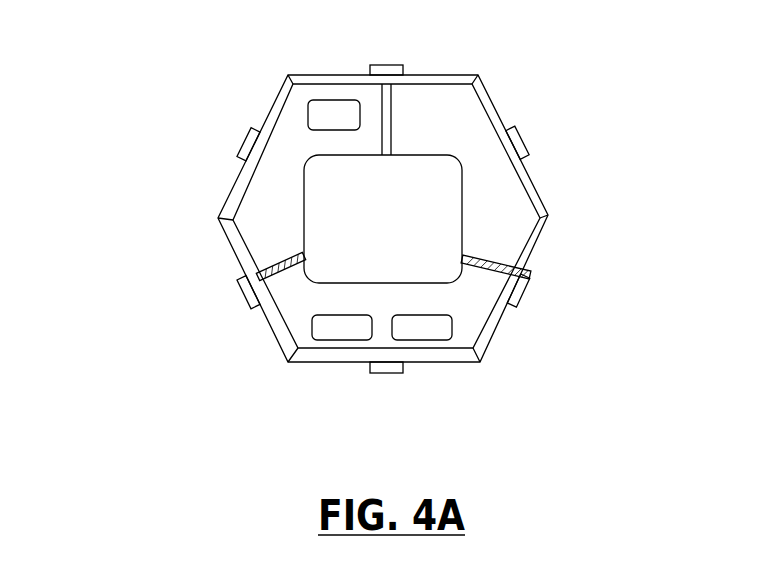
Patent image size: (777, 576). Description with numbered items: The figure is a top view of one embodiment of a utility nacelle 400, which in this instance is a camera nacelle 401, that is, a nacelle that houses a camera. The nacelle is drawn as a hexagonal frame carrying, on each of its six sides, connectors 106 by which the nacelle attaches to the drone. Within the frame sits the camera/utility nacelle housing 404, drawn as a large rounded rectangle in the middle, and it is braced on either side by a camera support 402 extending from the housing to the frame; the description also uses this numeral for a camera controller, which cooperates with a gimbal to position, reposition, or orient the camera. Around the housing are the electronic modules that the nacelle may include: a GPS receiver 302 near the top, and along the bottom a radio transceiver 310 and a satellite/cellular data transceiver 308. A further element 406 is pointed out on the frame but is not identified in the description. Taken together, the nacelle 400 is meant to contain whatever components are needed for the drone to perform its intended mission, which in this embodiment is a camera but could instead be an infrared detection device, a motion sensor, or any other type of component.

The utility nacelle 400 is at (133, 131).
The camera nacelle 401 is at (495, 328).
The inner frame wall 406 is at (490, 93).
The connectors 106 is at (240, 156).
The camera/utility nacelle housing 404 is at (440, 196).
The camera support 402 is at (270, 260).
The GPS receiver 302 is at (308, 110).
The radio transceiver 310 is at (313, 323).
The satellite/cellular data transceiver 308 is at (425, 332).